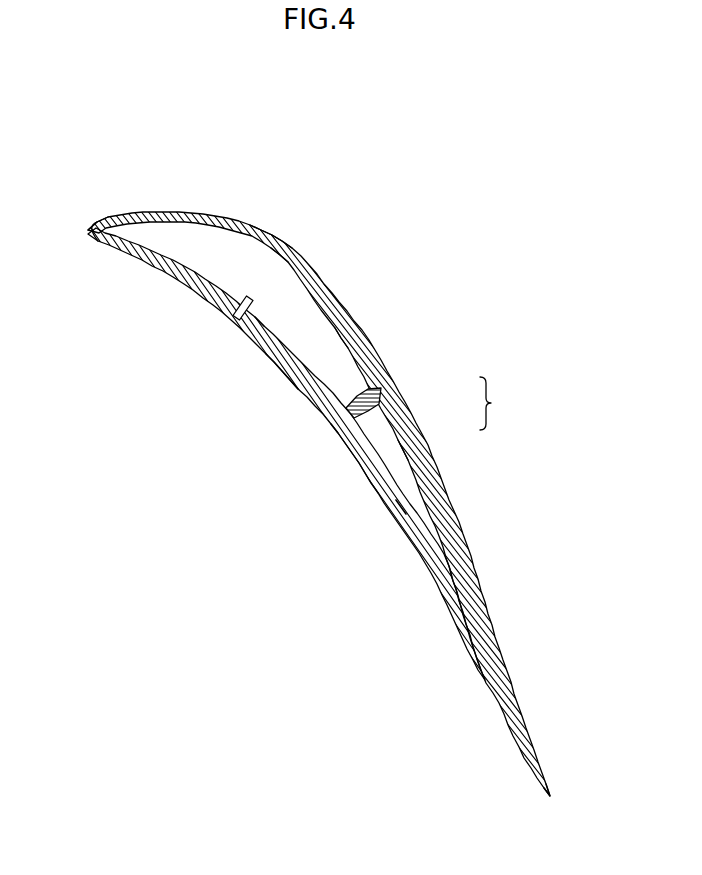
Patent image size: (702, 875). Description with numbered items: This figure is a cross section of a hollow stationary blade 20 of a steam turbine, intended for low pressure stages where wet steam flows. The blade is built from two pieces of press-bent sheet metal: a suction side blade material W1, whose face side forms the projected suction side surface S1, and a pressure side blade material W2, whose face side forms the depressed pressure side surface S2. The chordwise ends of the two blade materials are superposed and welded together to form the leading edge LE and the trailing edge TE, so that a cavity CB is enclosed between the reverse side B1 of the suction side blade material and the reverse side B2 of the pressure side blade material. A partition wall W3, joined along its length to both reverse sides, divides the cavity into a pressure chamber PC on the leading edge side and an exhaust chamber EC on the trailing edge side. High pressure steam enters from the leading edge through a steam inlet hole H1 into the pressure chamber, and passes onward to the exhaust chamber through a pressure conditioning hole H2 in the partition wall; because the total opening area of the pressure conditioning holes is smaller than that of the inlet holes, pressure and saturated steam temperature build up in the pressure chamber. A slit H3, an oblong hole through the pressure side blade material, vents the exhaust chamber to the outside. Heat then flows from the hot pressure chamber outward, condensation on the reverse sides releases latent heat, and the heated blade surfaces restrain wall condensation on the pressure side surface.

The stationary blade 20 is at (351, 495).
The steam inlet hole H1 is at (92, 229).
The leading edge LE is at (90, 233).
The suction side surface S1 is at (276, 240).
The suction side blade material W1 is at (316, 248).
The reverse side of the suction side blade material B1 is at (279, 258).
The reverse side of the pressure side blade material B2 is at (261, 326).
The pressure side blade material W2 is at (251, 342).
The pressure side surface S2 is at (298, 384).
The pressure conditioning hole H2 is at (360, 395).
The partition wall W3 is at (348, 451).
The pressure chamber PC is at (340, 344).
The exhaust chamber EC is at (396, 446).
The cavity CB is at (497, 403).
The slit H3 is at (396, 511).
The trailing edge TE is at (550, 797).